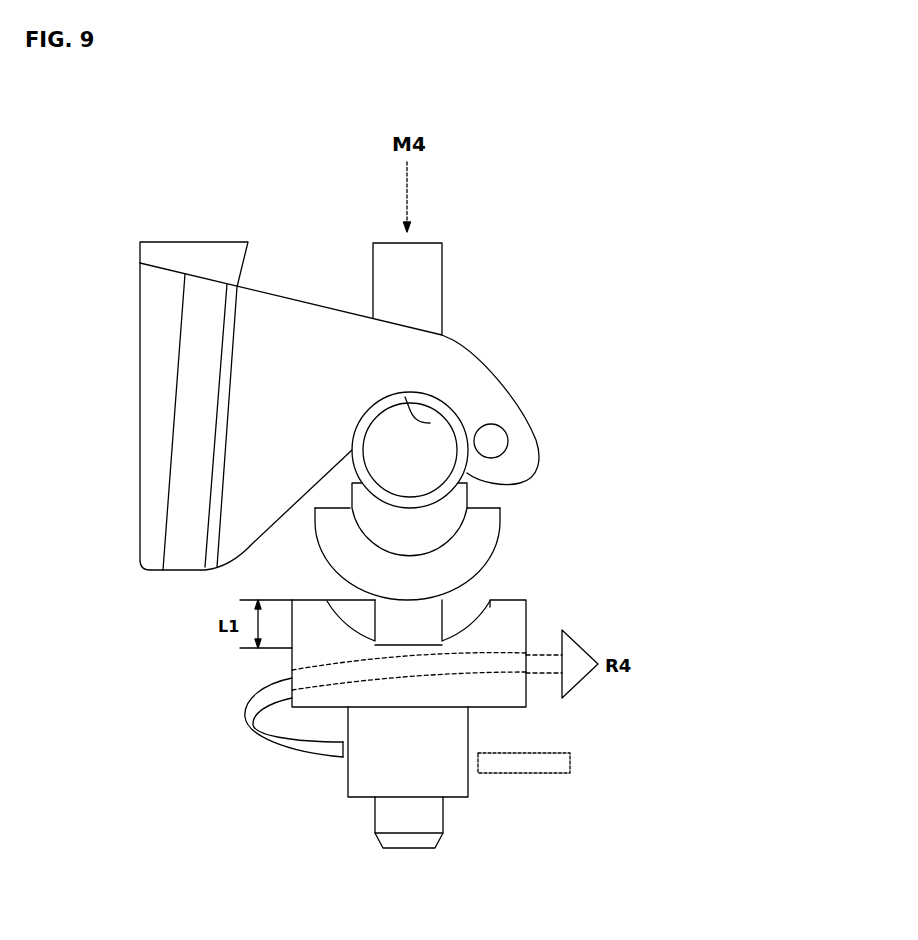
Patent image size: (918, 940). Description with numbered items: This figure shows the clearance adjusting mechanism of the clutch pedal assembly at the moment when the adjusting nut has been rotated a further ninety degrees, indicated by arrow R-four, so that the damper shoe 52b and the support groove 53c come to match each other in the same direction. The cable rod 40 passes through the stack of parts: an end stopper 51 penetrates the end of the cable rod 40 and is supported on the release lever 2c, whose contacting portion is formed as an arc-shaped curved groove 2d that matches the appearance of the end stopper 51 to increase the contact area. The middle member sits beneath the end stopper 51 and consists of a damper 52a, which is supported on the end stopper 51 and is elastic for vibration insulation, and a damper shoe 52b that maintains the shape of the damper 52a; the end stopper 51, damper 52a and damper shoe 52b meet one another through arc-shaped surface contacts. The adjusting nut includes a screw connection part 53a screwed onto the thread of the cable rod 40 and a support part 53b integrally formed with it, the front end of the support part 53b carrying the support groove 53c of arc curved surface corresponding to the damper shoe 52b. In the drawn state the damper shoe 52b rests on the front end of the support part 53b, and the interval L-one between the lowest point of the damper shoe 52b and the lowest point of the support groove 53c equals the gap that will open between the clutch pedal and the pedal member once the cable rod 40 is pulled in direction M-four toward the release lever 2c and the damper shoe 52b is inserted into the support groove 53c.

The release lever 2c is at (152, 403).
The arc-shaped curved groove 2d is at (430, 423).
The cable rod 40 is at (427, 282).
The end stopper 51 is at (423, 447).
The damper 52a is at (430, 530).
The damper shoe 52b is at (347, 547).
The screw connection part 53a is at (507, 690).
The support part 53b is at (370, 775).
The support groove 53c is at (473, 617).